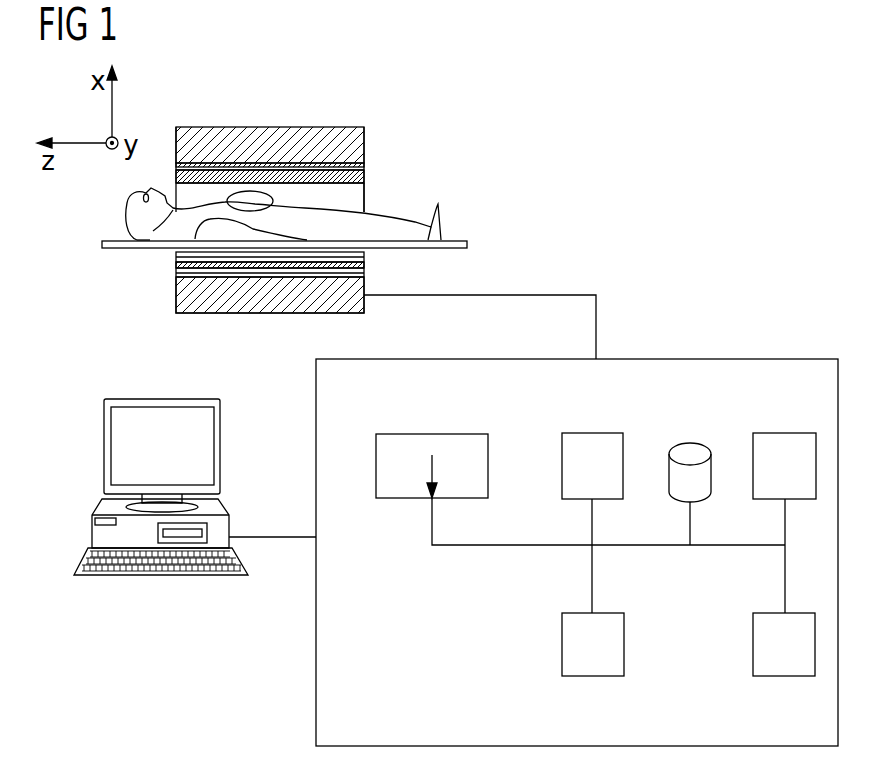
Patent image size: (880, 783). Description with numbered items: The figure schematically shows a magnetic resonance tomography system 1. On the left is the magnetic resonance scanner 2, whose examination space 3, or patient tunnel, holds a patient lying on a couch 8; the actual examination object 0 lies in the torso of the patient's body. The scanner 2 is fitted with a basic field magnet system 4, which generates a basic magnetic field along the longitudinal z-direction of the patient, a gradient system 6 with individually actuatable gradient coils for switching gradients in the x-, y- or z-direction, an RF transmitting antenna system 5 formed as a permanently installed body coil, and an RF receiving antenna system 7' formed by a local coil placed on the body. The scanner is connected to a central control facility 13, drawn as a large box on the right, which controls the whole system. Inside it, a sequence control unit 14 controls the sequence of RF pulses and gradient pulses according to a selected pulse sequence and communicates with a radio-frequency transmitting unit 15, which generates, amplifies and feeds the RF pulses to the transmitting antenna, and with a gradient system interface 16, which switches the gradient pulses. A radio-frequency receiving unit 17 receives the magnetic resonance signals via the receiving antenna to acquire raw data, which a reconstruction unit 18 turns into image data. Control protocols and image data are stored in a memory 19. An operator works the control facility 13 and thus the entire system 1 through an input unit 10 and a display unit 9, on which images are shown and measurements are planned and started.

The magnetic resonance tomography system 1 is at (679, 144).
The magnetic resonance scanner 2 is at (305, 134).
The examination space 3 is at (358, 203).
The basic field magnet system 4 is at (182, 295).
The RF transmitting antenna system 5 is at (176, 180).
The gradient system 6 is at (364, 163).
The RF receiving antenna system 7' is at (246, 144).
The examination object 0 is at (440, 225).
The couch 8 is at (467, 246).
The display unit 9 is at (160, 399).
The input unit 10 is at (162, 578).
The central control facility 13 is at (705, 359).
The sequence control unit 14 is at (432, 434).
The radio-frequency transmitting unit 15 is at (592, 433).
The gradient system interface 16 is at (562, 646).
The radio-frequency receiving unit 17 is at (785, 433).
The reconstruction unit 18 is at (753, 646).
The memory 19 is at (690, 444).